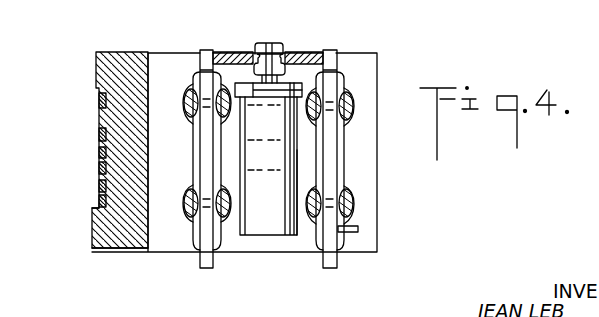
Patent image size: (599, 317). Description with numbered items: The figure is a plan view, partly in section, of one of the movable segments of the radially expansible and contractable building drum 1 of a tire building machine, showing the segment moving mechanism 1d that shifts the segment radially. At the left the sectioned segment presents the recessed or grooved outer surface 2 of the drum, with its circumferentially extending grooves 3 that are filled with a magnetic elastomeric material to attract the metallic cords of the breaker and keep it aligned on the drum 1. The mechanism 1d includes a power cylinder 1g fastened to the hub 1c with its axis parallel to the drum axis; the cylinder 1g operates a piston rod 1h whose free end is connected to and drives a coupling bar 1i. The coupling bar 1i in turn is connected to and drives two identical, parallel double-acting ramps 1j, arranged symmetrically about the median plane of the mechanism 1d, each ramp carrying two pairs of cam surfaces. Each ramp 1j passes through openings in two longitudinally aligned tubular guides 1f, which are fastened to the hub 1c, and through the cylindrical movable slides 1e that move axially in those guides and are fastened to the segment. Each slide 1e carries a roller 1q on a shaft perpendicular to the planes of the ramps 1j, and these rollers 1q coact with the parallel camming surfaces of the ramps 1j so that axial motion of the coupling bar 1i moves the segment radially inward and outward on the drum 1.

The building drum 1 is at (108, 50).
The grooved outer surface 2 is at (92, 200).
The circumferentially extending grooves 3 is at (99, 168).
The hub 1c is at (179, 52).
The coupling bar 1i is at (298, 57).
The power cylinder 1g is at (257, 228).
The roller 1q is at (311, 234).
The double-acting cams or ramps 1j is at (196, 266).
The movable slides 1e is at (193, 113).
The tubular guides 1f is at (190, 94).
The segment moving mechanism 1d is at (190, 197).
The piston rod 1h is at (336, 262).